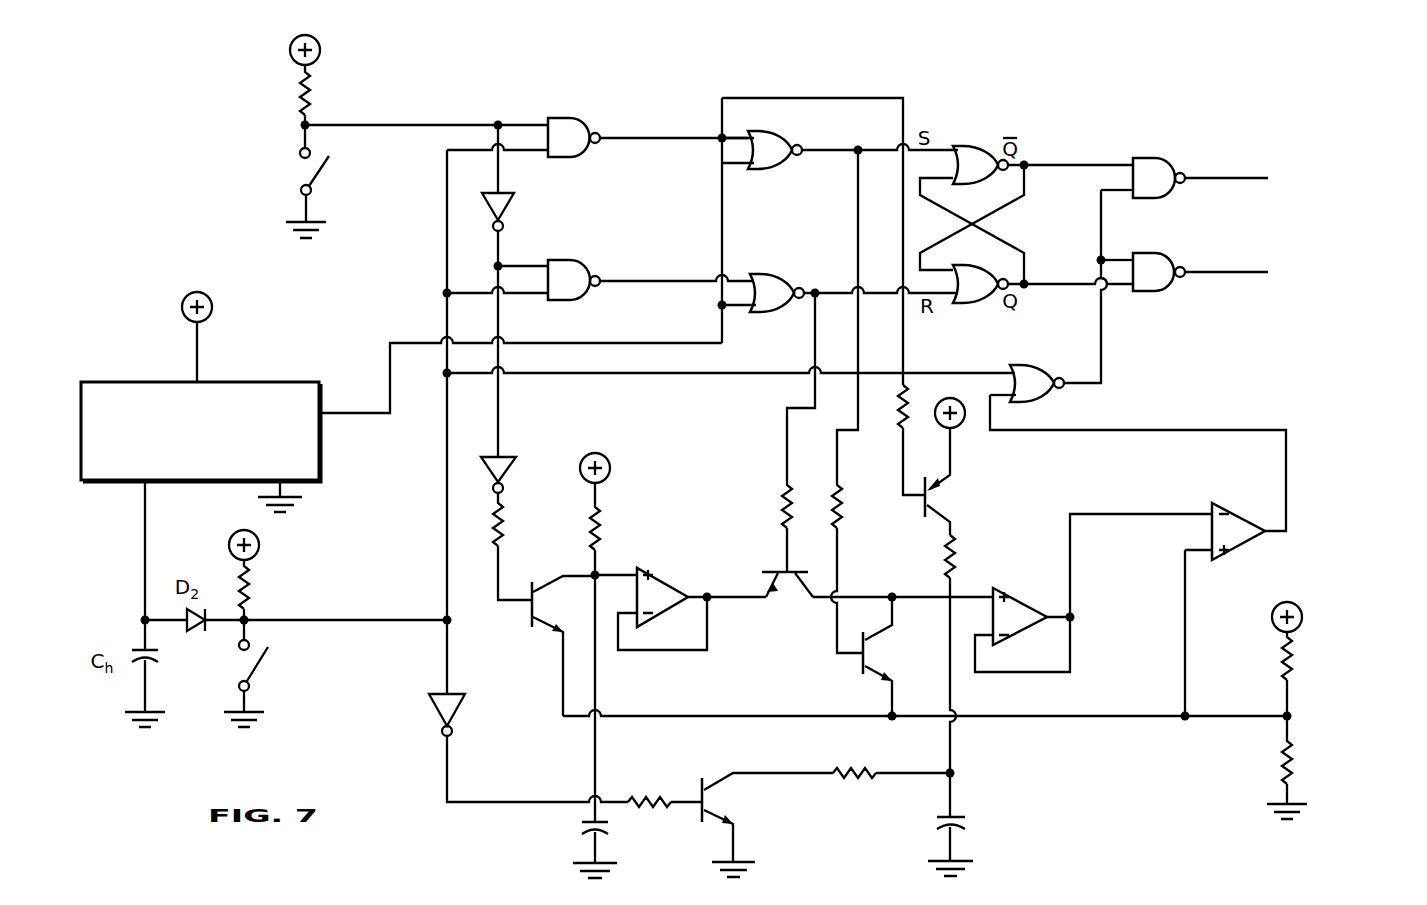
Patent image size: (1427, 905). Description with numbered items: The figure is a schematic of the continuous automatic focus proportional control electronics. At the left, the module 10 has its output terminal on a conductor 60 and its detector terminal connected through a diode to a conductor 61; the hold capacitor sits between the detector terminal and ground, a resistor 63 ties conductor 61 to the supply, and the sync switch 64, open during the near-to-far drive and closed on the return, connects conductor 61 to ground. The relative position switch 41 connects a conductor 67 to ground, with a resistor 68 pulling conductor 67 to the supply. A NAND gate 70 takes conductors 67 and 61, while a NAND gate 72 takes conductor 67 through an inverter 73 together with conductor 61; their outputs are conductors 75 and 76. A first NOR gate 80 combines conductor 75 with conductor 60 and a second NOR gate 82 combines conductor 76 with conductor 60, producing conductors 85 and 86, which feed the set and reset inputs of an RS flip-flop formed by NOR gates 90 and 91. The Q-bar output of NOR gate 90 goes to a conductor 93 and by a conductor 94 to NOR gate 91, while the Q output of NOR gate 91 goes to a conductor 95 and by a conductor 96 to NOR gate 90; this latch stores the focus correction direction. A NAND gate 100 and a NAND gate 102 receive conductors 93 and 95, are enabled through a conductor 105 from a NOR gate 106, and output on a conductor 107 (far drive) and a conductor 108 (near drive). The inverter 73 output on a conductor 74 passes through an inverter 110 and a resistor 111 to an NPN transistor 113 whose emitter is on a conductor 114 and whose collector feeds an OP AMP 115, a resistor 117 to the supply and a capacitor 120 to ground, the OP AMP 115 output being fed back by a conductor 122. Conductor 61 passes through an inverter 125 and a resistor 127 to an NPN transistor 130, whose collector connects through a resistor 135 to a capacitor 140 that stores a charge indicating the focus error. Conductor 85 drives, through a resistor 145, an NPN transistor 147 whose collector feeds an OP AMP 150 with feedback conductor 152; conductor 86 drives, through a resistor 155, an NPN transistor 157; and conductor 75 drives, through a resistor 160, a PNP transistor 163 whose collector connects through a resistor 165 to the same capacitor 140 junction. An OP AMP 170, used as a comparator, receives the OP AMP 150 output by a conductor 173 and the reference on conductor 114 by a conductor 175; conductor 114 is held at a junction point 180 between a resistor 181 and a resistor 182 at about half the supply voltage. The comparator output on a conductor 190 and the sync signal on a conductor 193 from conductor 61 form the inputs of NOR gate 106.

The module 10 is at (263, 382).
The relative position switch 41 is at (320, 172).
The conductor 60 is at (390, 388).
The conductor 61 is at (447, 466).
The resistor 63 is at (258, 585).
The sync switch 64 is at (260, 664).
The conductor 67 is at (360, 125).
The resistor 68 is at (300, 93).
The NAND gate 70 is at (572, 117).
The NAND gate 72 is at (572, 260).
The inverter 73 is at (514, 206).
The conductor 74 is at (496, 258).
The conductor 75 is at (632, 137).
The conductor 76 is at (640, 280).
The first NOR gate 80 is at (762, 170).
The second NOR gate 82 is at (778, 275).
The conductor 85 is at (826, 150).
The conductor 86 is at (833, 293).
The NOR gate 90 is at (974, 145).
The NOR gate 91 is at (973, 303).
The conductor 93 is at (1056, 165).
The conductor 94 is at (997, 212).
The conductor 95 is at (1050, 284).
The conductor 96 is at (955, 209).
The NAND gate 100 is at (1143, 158).
The NAND gate 102 is at (1143, 254).
The conductor 105 is at (1101, 360).
The NOR gate 106 is at (1038, 365).
The conductor 107 is at (1212, 178).
The conductor 108 is at (1222, 272).
The inverter 110 is at (514, 466).
The resistor 111 is at (503, 522).
The NPN transistor 113 is at (544, 594).
The conductor 114 is at (627, 716).
The OP AMP 115 is at (662, 578).
The resistor 117 is at (600, 522).
The capacitor 120 is at (585, 815).
The conductor 122 is at (707, 625).
The inverter 125 is at (458, 706).
The resistor 127 is at (650, 806).
The NPN transistor 130 is at (710, 798).
The resistor 135 is at (855, 780).
The capacitor 140 is at (960, 814).
The resistor 145 is at (843, 503).
The NPN transistor 147 is at (866, 655).
The OP AMP 150 is at (1030, 634).
The conductor 152 is at (1070, 648).
The resistor 155 is at (787, 497).
The NPN transistor 157 is at (790, 590).
The resistor 160 is at (900, 402).
The PNP transistor 163 is at (940, 497).
The resistor 165 is at (957, 553).
The OP AMP 170 is at (1232, 505).
The conductor 173 is at (1115, 514).
The conductor 175 is at (1185, 602).
The junction point 180 is at (1292, 712).
The resistor 181 is at (1282, 668).
The resistor 182 is at (1294, 762).
The conductor 190 is at (1286, 450).
The conductor 193 is at (740, 373).